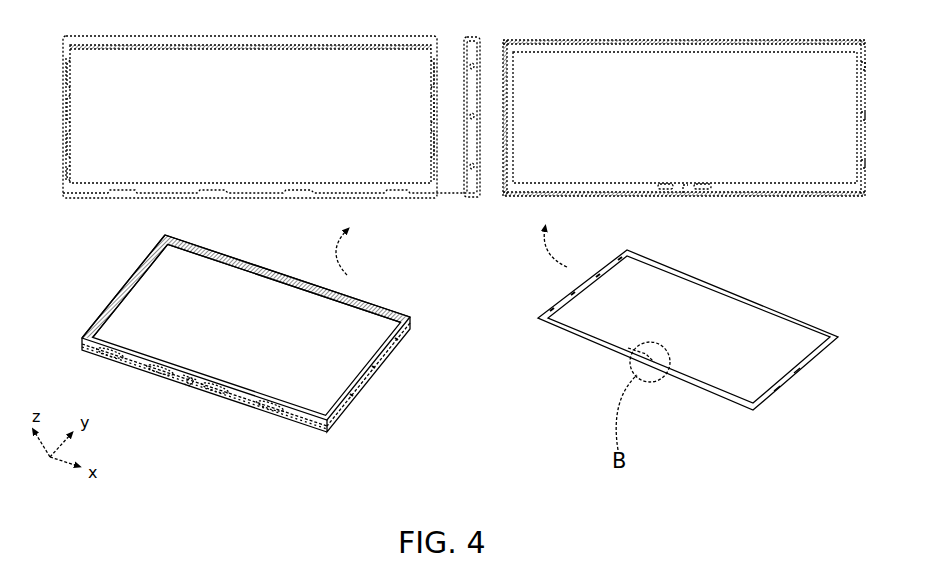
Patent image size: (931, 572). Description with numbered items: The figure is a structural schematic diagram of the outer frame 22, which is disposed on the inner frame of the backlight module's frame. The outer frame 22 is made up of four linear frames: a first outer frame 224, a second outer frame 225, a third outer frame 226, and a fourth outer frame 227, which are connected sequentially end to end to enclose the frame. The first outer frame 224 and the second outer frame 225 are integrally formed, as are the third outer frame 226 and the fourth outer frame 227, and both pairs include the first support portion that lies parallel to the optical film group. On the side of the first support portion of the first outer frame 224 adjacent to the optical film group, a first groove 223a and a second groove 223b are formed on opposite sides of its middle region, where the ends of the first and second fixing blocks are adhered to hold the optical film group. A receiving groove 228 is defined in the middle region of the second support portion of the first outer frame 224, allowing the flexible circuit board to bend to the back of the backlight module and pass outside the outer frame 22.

The outer frame 22 is at (102, 318).
The fourth outer frame 227 is at (145, 268).
The third outer frame 226 is at (386, 308).
The second outer frame 225 is at (370, 378).
The first outer frame 224 is at (258, 400).
The receiving groove 228 is at (185, 378).
The first groove 223a is at (668, 190).
The second groove 223b is at (705, 190).